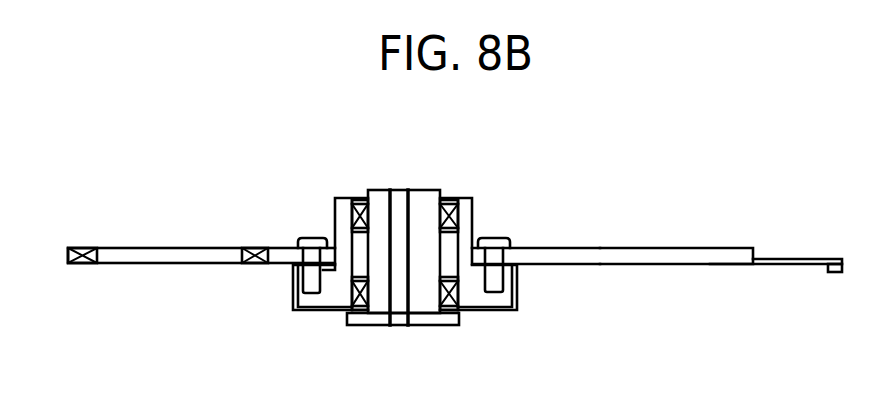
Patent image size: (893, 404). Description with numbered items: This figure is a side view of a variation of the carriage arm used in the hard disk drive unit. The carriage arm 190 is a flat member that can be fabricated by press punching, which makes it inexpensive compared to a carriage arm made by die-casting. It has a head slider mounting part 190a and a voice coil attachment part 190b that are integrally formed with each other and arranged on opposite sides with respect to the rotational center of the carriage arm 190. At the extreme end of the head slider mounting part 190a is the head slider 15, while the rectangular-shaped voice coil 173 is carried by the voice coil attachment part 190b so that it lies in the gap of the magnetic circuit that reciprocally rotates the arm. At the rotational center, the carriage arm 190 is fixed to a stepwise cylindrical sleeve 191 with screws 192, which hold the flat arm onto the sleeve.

The head slider 15 is at (837, 272).
The voice coil 173 is at (90, 263).
The carriage arm 190 is at (682, 248).
The head slider mounting part 190a is at (592, 248).
The voice coil attachment part 190b is at (198, 248).
The stepwise cylindrical sleeve 191 is at (480, 302).
The screws 192 is at (502, 237).